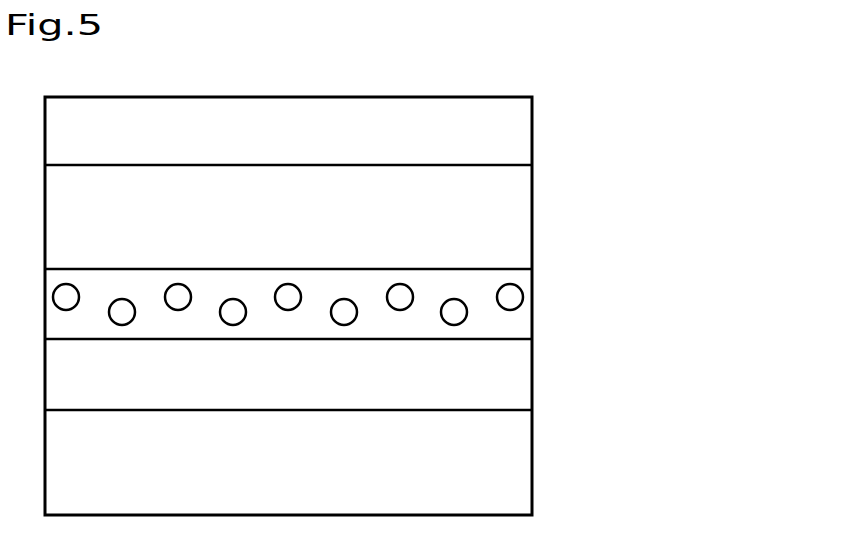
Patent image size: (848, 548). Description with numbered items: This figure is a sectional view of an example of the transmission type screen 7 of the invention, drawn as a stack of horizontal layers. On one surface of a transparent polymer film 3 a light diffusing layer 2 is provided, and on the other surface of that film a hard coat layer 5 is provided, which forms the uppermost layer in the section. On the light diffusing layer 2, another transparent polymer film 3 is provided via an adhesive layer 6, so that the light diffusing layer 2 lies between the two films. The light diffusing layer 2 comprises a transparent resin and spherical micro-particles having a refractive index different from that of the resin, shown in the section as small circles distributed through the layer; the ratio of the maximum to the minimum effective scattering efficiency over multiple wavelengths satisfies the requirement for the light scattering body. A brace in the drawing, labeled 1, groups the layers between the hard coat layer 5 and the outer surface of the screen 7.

The laminate 1 is at (650, 198).
The light diffusing layer 2 is at (532, 305).
The transparent polymer film 3 is at (532, 200).
The hard coat layer 5 is at (532, 131).
The adhesive layer 6 is at (532, 375).
The transmission type screen 7 is at (707, 96).